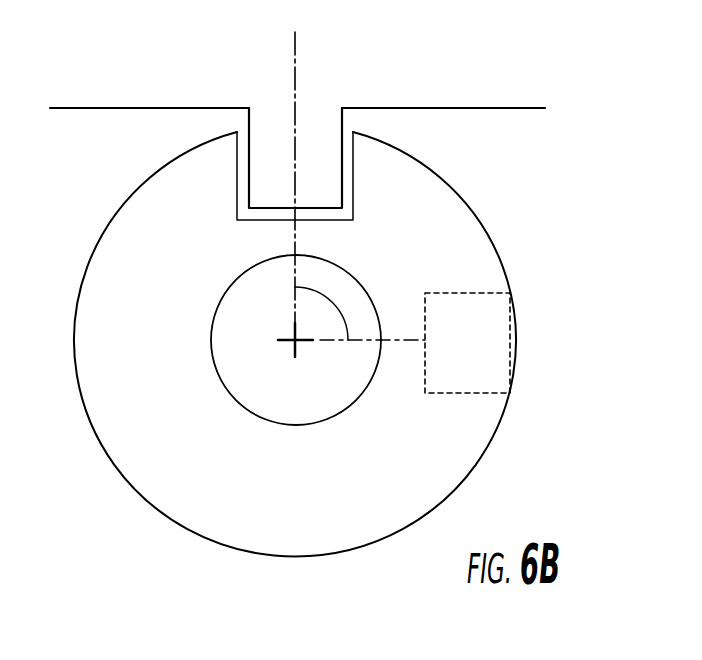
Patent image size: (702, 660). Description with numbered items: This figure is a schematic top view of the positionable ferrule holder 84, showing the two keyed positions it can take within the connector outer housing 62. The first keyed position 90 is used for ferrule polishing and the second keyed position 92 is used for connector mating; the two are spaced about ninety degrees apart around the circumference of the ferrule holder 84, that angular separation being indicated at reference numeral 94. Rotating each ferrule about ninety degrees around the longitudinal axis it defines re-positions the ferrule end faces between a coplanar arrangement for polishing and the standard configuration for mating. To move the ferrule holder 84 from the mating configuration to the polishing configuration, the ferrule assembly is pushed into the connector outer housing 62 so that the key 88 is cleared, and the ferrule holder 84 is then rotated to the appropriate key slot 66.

The connector outer housing 62 is at (147, 108).
The key slot 66 is at (477, 340).
The positionable ferrule holder 84 is at (485, 225).
The key 88 is at (317, 138).
The first keyed position 90 is at (382, 158).
The second keyed position 92 is at (538, 330).
The angle between keyed positions 94 is at (332, 293).